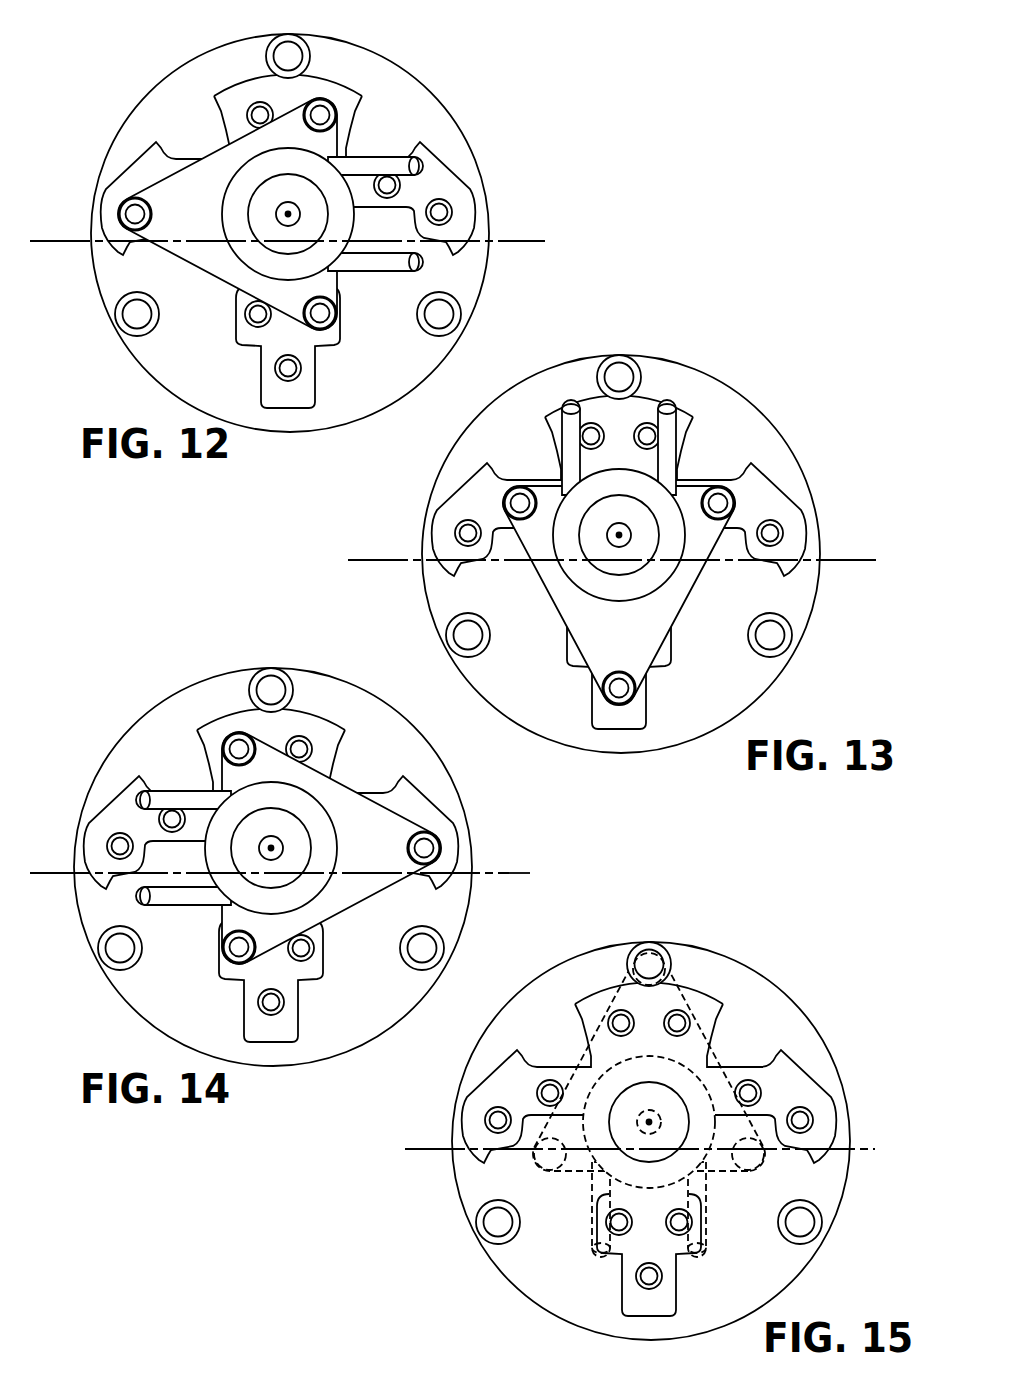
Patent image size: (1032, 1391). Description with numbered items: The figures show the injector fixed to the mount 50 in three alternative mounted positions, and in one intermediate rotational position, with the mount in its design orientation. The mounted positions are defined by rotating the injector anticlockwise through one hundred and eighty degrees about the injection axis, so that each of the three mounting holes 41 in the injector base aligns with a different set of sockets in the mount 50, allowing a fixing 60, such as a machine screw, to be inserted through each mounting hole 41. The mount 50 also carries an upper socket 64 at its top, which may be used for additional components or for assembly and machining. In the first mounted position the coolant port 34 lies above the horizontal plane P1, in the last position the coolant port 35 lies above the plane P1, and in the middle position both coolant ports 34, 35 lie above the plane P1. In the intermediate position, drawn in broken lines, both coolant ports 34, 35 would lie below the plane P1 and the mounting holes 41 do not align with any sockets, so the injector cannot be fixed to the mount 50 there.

In FIG. 12, the coolant port 34 is at (416, 152).
In FIG. 13, the coolant port 34 is at (553, 415).
In FIG. 14, the coolant port 34 is at (133, 916).
In FIG. 15, the coolant port 34 is at (726, 1226).
In FIG. 12, the coolant port 35 is at (417, 269).
In FIG. 13, the coolant port 35 is at (705, 419).
In FIG. 14, the coolant port 35 is at (132, 798).
In FIG. 15, the coolant port 35 is at (584, 1233).
In FIG. 14, the mounting hole 41 is at (298, 865).
In FIG. 12, the mount 50 is at (296, 233).
In FIG. 13, the mount 50 is at (624, 554).
In FIG. 14, the mount 50 is at (290, 867).
In FIG. 15, the mount 50 is at (651, 1130).
In FIG. 12, the fixing 60 is at (258, 229).
In FIG. 13, the fixing 60 is at (620, 571).
In FIG. 12, the upper socket 64 is at (288, 172).
In FIG. 13, the upper socket 64 is at (619, 484).
In FIG. 14, the upper socket 64 is at (271, 798).
In FIG. 15, the upper socket 64 is at (649, 1072).
In FIG. 12, the plane P1 is at (315, 221).
In FIG. 13, the plane P1 is at (614, 532).
In FIG. 14, the plane P1 is at (296, 860).
In FIG. 15, the plane P1 is at (643, 1119).